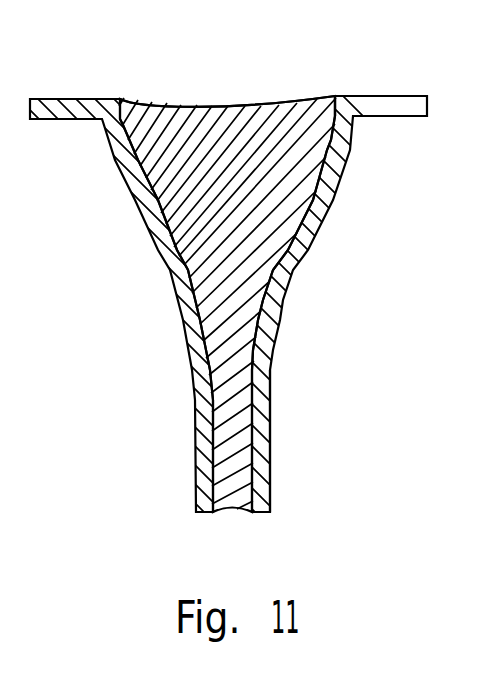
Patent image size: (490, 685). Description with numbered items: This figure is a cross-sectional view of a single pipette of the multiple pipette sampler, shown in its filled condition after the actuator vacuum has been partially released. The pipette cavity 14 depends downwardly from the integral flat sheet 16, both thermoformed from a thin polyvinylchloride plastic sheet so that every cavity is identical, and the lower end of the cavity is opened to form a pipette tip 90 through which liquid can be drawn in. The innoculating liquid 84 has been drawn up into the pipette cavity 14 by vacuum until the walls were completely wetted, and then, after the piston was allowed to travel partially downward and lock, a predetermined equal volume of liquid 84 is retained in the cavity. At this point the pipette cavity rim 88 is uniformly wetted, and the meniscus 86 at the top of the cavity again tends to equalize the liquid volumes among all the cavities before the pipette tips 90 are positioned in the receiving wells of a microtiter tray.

The pipette cavity 14 is at (142, 213).
The flat sheet 16 is at (390, 96).
The innoculating liquid 84 is at (142, 92).
The meniscus 86 is at (252, 106).
The pipette cavity rim 88 is at (333, 95).
The pipette tip 90 is at (270, 420).